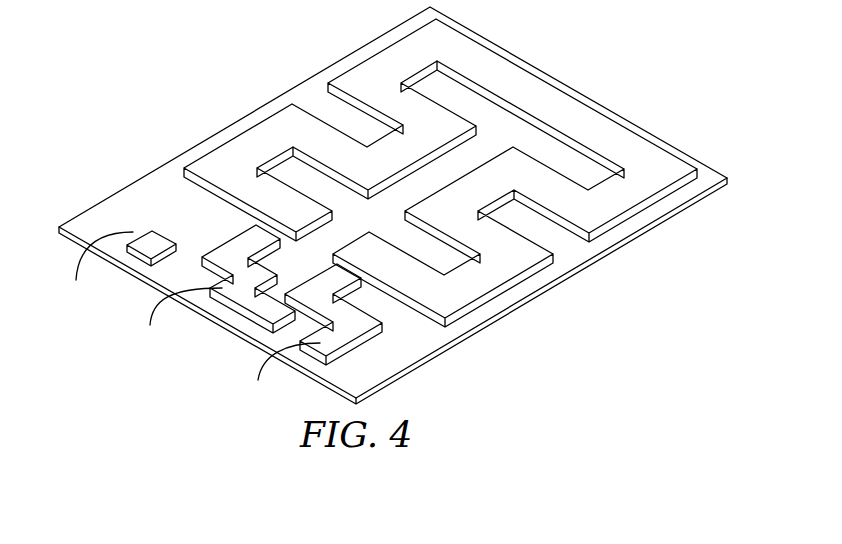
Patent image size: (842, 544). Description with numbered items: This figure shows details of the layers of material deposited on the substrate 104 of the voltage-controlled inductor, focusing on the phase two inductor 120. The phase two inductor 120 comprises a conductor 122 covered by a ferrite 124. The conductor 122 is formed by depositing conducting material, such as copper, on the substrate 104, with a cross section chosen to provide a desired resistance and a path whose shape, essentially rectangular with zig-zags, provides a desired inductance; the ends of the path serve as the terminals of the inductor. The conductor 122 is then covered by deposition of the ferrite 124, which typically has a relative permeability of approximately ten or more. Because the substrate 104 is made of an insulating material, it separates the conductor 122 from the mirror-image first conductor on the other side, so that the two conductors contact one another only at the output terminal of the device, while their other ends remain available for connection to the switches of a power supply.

The substrate 104 is at (112, 198).
The phase 2 inductor L2 120 is at (227, 111).
The conductor 122 is at (232, 245).
The ferrite 124 is at (395, 48).